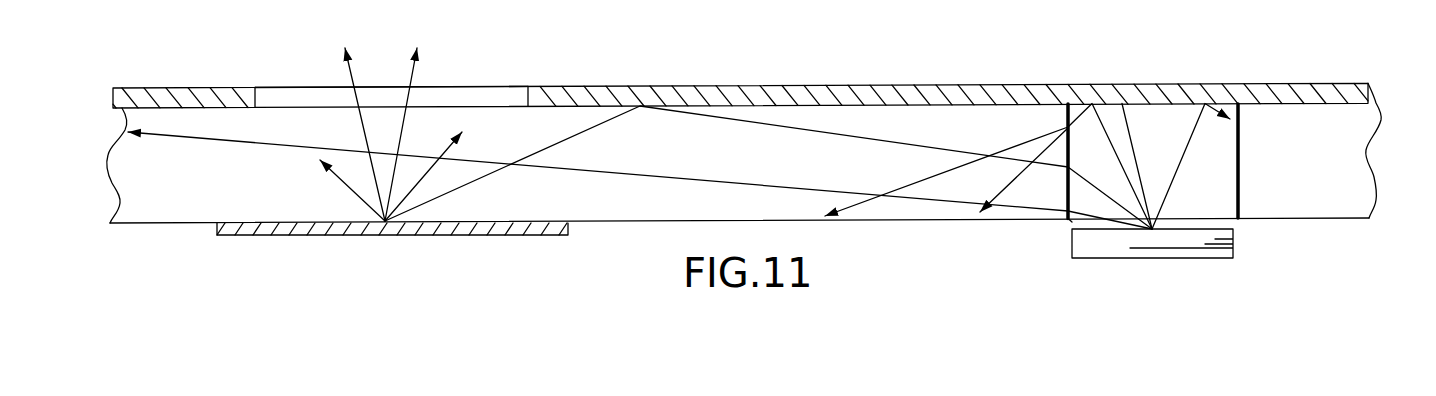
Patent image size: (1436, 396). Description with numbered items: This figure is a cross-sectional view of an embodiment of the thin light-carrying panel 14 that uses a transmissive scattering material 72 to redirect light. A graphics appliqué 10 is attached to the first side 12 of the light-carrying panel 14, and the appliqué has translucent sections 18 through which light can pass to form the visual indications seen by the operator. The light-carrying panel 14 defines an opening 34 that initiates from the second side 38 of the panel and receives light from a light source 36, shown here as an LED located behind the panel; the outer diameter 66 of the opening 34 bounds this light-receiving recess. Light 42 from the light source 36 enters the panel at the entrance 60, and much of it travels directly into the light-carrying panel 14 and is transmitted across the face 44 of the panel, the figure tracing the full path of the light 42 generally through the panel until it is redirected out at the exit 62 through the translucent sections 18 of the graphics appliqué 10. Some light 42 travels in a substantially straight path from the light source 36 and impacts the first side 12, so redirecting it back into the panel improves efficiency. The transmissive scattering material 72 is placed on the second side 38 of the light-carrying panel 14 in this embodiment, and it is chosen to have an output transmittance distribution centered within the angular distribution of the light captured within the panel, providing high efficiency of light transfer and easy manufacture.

The graphics appliqué 10 is at (1323, 92).
The first side 12 is at (867, 103).
The light-carrying panel 14 is at (1343, 163).
The translucent sections 18 is at (300, 98).
The opening 34 is at (1203, 173).
The light source 36 is at (1190, 258).
The second side 38 is at (654, 222).
The light 42 is at (411, 75).
The face 44 is at (763, 147).
The entrance 60 is at (1070, 222).
The exit 62 is at (477, 93).
The outer diameter 66 is at (1240, 143).
The transmissive scattering material 72 is at (300, 234).